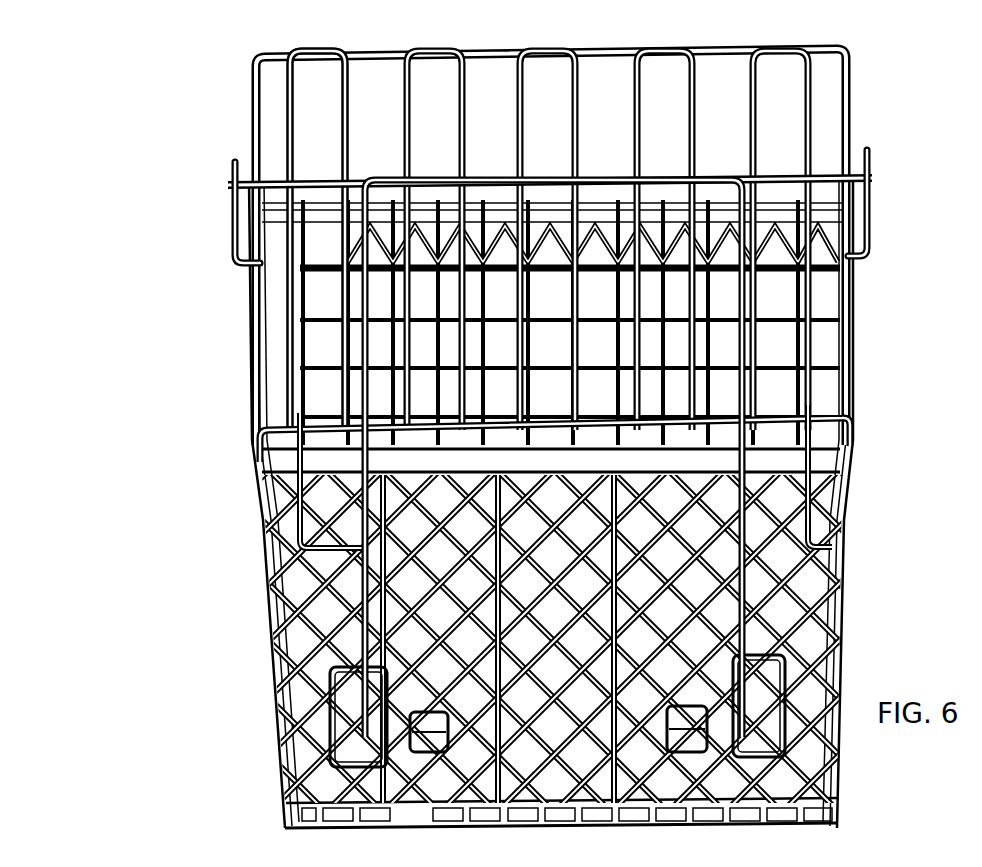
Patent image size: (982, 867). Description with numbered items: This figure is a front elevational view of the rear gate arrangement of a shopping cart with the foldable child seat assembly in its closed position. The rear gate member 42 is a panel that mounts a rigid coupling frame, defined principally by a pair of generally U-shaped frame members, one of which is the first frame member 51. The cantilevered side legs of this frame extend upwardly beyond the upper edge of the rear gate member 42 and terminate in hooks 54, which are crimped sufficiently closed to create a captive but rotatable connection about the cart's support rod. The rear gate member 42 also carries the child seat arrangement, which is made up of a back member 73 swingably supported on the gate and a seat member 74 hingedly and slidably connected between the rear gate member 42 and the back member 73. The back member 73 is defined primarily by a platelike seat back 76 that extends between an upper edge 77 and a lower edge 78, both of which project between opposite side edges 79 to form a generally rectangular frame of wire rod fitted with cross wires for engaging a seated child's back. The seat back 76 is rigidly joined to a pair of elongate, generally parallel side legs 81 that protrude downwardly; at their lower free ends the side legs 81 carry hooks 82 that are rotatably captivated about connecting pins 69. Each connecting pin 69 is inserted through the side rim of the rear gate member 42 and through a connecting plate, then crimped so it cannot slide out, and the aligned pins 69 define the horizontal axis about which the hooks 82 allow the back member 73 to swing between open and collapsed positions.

The rear gate member 42 is at (275, 712).
The first U-shaped frame member 51 is at (876, 194).
The hooks 54 is at (233, 182).
The connecting pin 69 is at (400, 806).
The back member 73 is at (250, 118).
The seat member 74 is at (790, 347).
The seat back 76 is at (805, 100).
The upper edge 77 is at (374, 52).
The lower edge 78 is at (325, 440).
The side edges 79 is at (250, 350).
The side legs 81 is at (370, 593).
The hooks 82 is at (367, 735).